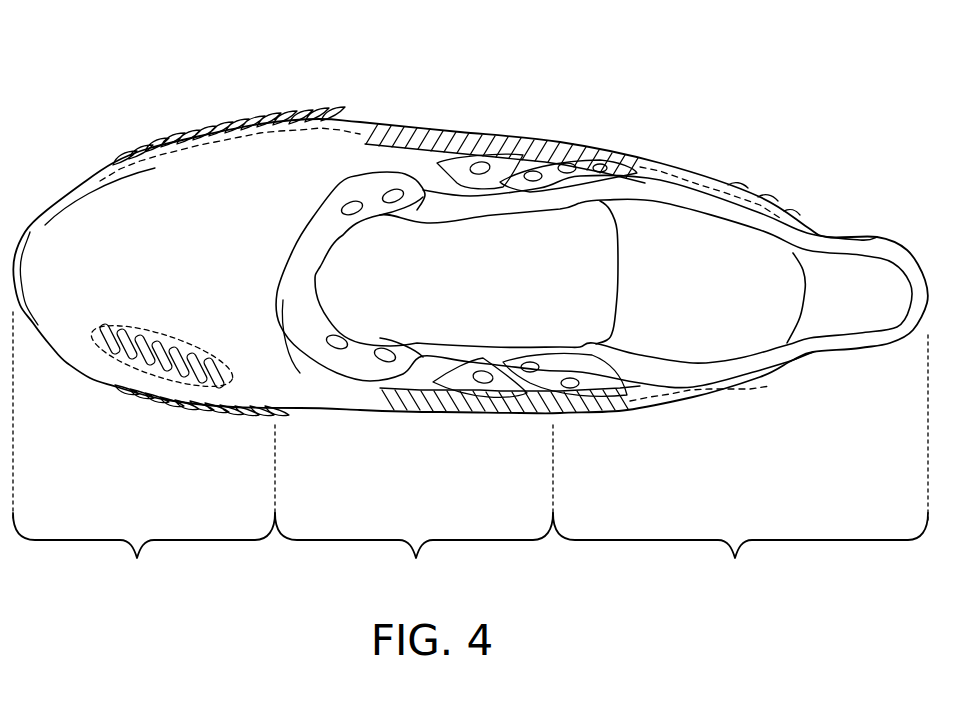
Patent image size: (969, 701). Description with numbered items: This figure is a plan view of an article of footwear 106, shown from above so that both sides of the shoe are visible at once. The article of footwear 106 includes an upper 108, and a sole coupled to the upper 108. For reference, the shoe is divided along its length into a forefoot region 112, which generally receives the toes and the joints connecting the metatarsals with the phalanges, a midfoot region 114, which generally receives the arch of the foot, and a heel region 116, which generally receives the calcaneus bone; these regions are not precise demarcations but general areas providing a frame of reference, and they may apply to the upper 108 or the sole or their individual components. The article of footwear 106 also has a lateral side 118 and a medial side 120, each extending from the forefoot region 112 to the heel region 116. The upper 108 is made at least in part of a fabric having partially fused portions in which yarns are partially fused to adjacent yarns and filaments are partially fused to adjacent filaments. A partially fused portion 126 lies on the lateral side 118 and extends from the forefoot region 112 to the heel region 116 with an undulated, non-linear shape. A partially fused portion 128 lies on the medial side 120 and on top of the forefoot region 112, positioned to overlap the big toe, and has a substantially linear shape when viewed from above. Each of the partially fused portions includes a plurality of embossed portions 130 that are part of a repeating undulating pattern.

The article of footwear 106 is at (656, 89).
The upper 108 is at (105, 207).
The forefoot region 112 is at (144, 457).
The midfoot region 114 is at (414, 513).
The heel region 116 is at (740, 468).
The lateral side 118 is at (345, 158).
The medial side 120 is at (300, 372).
The partially fused portion 126 is at (247, 153).
The partially fused portion 128 is at (125, 330).
The embossed portions 130 is at (216, 126).